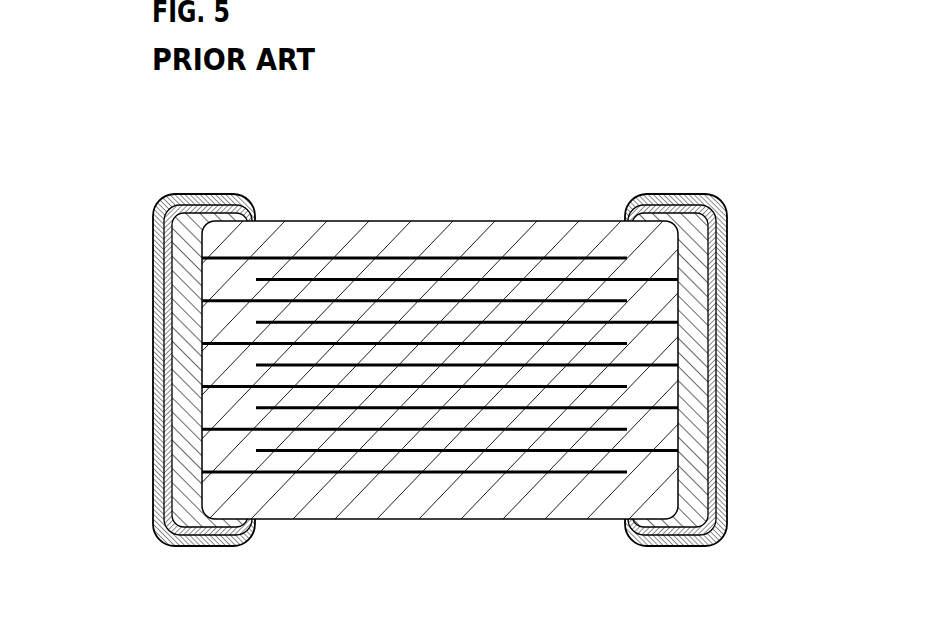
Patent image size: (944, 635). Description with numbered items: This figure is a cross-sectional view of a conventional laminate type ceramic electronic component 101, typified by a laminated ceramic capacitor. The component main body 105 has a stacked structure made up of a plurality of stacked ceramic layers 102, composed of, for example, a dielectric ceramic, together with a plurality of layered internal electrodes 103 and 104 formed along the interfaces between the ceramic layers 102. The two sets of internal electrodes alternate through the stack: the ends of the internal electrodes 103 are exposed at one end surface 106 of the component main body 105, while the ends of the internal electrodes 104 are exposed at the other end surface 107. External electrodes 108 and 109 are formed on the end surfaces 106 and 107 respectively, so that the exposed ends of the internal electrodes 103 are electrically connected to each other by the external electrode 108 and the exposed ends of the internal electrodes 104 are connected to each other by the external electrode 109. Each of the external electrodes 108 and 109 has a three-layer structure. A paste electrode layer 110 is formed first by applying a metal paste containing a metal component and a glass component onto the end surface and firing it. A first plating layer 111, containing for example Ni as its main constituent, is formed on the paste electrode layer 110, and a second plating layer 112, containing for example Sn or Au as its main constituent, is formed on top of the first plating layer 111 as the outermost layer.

The laminate type ceramic electronic component 101 is at (276, 116).
The ceramic layers 102 is at (463, 288).
The internal electrodes 103 is at (380, 300).
The internal electrodes 104 is at (543, 322).
The component main body 105 is at (592, 216).
The end surface 106 is at (193, 397).
The end surface 107 is at (725, 393).
The external electrode 108 is at (68, 252).
The external electrode 109 is at (802, 223).
The paste electrode layer 110 is at (187, 259).
The first plating layer 111 is at (153, 296).
The second plating layer 112 is at (153, 333).